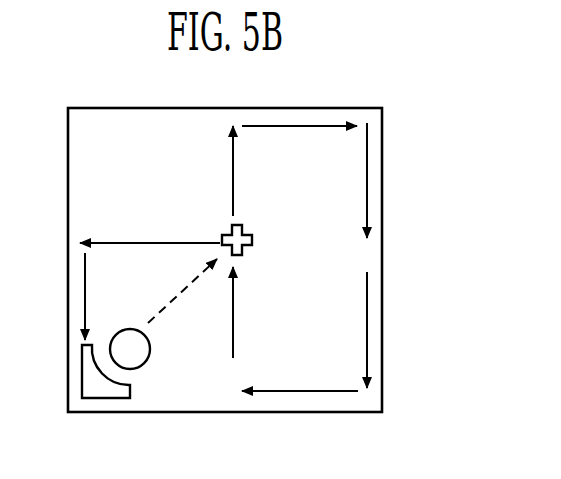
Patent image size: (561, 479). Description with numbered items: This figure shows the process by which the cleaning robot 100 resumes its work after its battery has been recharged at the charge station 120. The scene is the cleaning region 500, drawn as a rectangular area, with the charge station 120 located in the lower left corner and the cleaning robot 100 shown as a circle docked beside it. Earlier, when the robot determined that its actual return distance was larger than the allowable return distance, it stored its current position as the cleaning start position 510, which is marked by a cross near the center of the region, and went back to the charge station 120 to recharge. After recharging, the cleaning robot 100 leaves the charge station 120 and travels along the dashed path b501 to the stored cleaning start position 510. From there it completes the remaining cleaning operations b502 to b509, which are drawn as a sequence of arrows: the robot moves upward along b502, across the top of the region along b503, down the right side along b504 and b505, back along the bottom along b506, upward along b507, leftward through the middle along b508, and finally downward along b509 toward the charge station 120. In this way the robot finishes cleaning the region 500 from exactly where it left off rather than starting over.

The cleaning region 500 is at (382, 258).
The stored cleaning start position 510 is at (252, 240).
The cleaning robot 100 is at (150, 352).
The charge station 120 is at (130, 398).
The movement to stored cleaning start position b501 is at (148, 323).
The cleaning operation b502 is at (233, 176).
The cleaning operation b503 is at (290, 126).
The cleaning operation b504 is at (367, 174).
The cleaning operation b505 is at (367, 322).
The cleaning operation b506 is at (310, 392).
The cleaning operation b507 is at (233, 304).
The cleaning operation b508 is at (142, 243).
The cleaning operation b509 is at (85, 286).